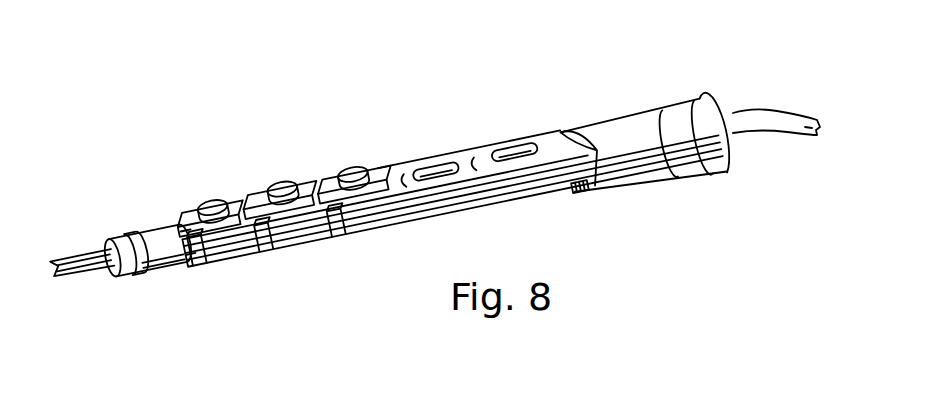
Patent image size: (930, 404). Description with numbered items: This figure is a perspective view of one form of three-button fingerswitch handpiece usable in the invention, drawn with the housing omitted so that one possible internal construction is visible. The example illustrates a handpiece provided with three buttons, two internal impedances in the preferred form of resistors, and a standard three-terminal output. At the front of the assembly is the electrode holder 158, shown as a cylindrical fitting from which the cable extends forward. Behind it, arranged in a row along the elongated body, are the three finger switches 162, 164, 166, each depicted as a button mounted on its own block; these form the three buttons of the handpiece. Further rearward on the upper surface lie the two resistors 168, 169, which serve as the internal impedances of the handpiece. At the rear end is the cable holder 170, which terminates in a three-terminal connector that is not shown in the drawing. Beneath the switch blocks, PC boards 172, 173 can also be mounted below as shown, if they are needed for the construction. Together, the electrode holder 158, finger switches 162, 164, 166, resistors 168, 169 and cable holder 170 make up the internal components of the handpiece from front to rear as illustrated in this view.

The electrode holder 158 is at (74, 250).
The finger switch 162 is at (184, 210).
The finger switch 164 is at (258, 188).
The finger switch 166 is at (333, 185).
The resistor 168 is at (428, 150).
The resistor 169 is at (505, 140).
The cable holder 170 is at (613, 122).
The PC board 172 is at (226, 265).
The PC board 173 is at (301, 243).